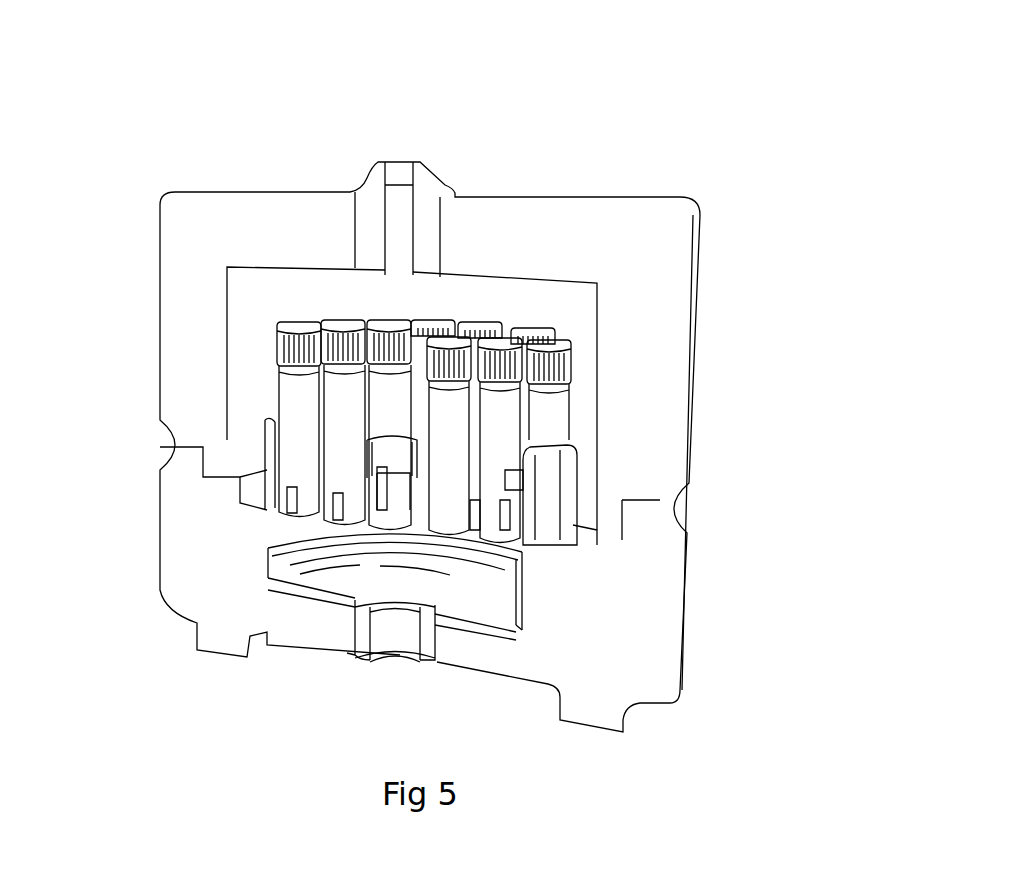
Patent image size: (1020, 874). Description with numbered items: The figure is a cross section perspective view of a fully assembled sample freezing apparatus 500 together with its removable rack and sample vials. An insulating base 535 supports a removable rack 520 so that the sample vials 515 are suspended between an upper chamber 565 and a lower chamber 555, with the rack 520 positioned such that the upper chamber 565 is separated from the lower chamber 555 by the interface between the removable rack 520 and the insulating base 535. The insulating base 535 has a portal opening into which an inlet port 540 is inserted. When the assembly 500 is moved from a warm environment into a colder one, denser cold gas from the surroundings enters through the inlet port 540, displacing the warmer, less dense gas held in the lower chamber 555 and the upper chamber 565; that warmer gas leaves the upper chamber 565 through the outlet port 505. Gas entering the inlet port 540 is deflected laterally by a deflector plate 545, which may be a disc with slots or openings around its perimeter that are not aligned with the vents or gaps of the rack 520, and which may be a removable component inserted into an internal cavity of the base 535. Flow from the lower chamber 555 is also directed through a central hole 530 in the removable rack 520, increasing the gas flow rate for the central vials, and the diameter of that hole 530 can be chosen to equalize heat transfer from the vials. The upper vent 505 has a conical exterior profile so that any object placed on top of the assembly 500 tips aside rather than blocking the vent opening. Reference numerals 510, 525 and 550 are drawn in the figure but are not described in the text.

The sample freezing apparatus 500 is at (430, 380).
The outlet port 505 is at (420, 198).
The housing 510 is at (638, 240).
The sample vials 515 is at (446, 368).
The removable rack 520 is at (563, 465).
The contact holder 525 is at (523, 478).
The central hole 530 is at (413, 447).
The insulating base 535 is at (580, 580).
The inlet port 540 is at (403, 638).
The deflector plate 545 is at (398, 578).
The platform base 550 is at (305, 577).
The lower chamber 555 is at (323, 535).
The upper chamber 565 is at (305, 283).